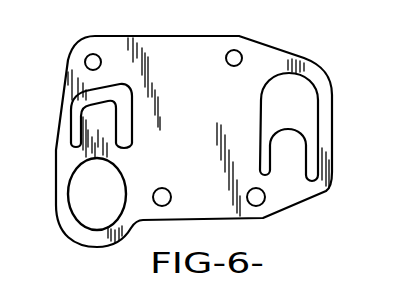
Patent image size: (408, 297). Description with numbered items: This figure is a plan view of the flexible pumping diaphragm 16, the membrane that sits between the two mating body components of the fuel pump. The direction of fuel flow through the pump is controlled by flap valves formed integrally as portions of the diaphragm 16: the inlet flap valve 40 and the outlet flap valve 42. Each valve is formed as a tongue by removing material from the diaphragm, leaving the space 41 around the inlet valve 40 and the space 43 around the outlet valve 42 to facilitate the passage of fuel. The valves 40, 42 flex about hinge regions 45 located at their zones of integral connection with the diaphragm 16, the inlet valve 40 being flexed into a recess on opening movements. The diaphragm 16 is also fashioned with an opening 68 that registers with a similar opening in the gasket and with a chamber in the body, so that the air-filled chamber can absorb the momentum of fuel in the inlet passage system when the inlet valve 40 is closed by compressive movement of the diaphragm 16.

The pumping diaphragm 16 is at (269, 52).
The inlet flap valve 40 is at (88, 115).
The space 41 is at (110, 45).
The outlet flap valve 42 is at (301, 149).
The space 43 is at (311, 102).
The hinge region 45 is at (87, 151).
The opening 68 is at (80, 200).